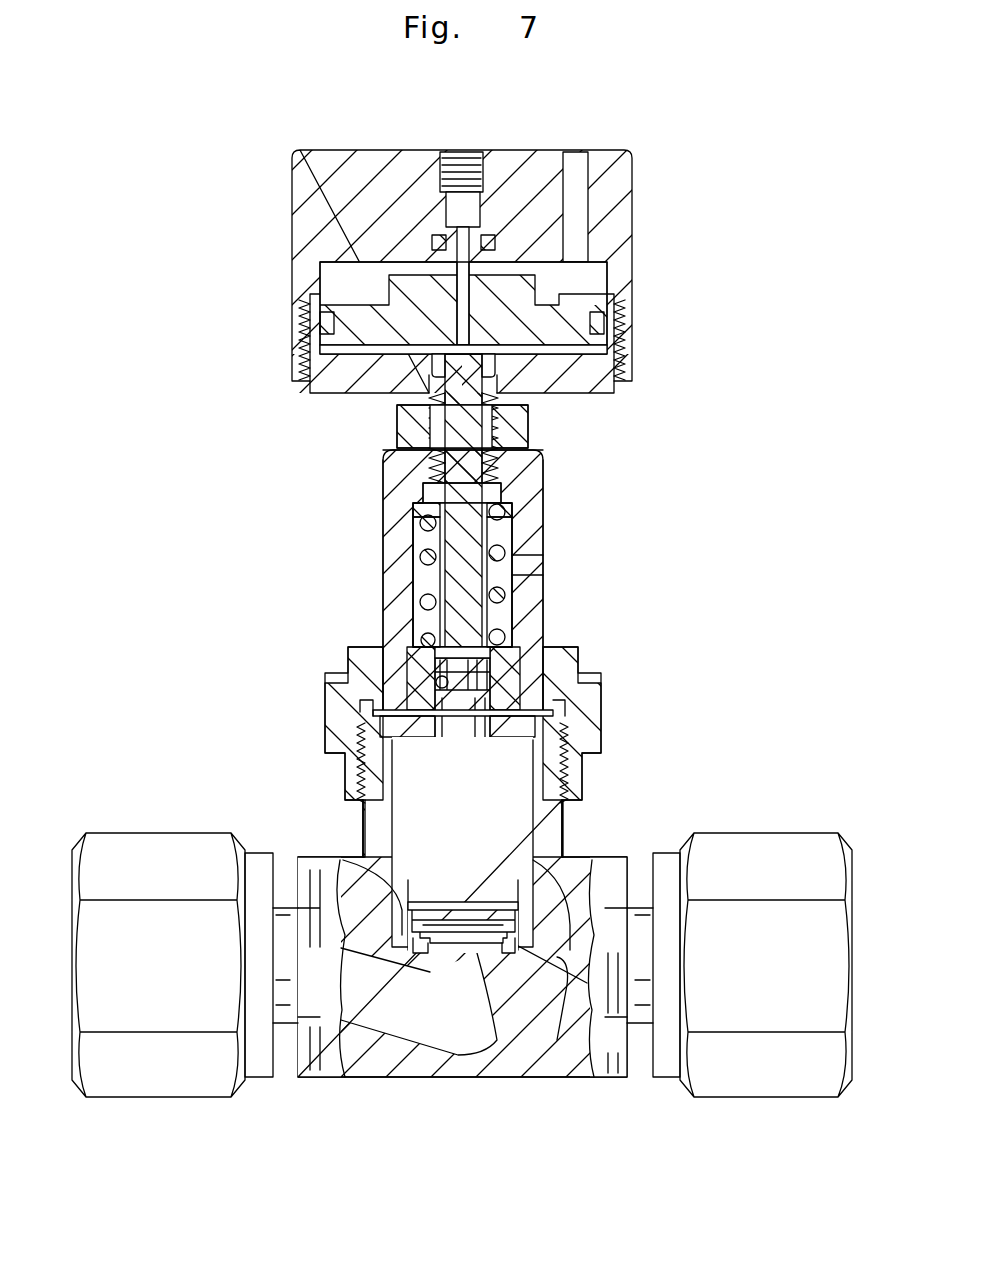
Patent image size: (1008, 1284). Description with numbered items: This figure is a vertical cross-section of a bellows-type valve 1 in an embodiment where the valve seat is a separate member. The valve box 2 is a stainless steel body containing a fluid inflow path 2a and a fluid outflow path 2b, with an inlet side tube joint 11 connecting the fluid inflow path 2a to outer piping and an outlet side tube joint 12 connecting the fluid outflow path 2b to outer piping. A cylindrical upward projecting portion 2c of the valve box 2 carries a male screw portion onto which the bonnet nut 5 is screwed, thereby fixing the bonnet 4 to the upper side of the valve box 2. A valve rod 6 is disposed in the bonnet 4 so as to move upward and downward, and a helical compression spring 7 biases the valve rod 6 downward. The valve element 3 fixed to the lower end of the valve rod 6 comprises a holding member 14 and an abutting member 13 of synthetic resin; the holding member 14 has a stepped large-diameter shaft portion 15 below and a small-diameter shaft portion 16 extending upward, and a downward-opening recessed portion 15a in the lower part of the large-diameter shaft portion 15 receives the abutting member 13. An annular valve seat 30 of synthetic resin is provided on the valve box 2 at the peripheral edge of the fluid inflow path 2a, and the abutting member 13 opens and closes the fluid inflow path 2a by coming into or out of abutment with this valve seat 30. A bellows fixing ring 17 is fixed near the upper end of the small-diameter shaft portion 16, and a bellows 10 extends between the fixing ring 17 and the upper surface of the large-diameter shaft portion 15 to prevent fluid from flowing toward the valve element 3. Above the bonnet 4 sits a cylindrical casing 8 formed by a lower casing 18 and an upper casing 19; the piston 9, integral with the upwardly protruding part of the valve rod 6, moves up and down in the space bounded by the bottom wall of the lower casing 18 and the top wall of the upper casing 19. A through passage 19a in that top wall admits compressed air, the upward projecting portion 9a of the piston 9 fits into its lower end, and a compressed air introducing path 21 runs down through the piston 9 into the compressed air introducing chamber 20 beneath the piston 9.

The valve 1 is at (708, 505).
The valve box 2 is at (606, 1060).
The fluid inflow path 2a is at (418, 1040).
The fluid outflow path 2b is at (561, 990).
The upward projecting portion 2c is at (378, 812).
The valve element 3 is at (503, 870).
The bonnet 4 is at (545, 602).
The bonnet nut 5 is at (605, 693).
The valve rod 6 is at (477, 540).
The helical compression spring 7 is at (503, 552).
The cylindrical casing 8 is at (632, 257).
The piston 9 is at (576, 300).
The upward projecting portion 9a is at (432, 242).
The bellows 10 is at (548, 776).
The inlet side tube joint 11 is at (148, 1097).
The outlet side tube joint 12 is at (782, 1097).
The abutting member 13 is at (488, 1000).
The holding member 14 is at (365, 848).
The large-diameter shaft portion 15 is at (380, 952).
The recessed portion 15a is at (433, 948).
The small-diameter shaft portion 16 is at (453, 768).
The bellows fixing ring 17 is at (548, 727).
The lower casing 18 is at (328, 378).
The upper casing 19 is at (318, 212).
The through passage 19a is at (477, 153).
The compressed air introducing chamber 20 is at (567, 352).
The compressed air introducing path 21 is at (430, 322).
The valve seat 30 is at (420, 950).